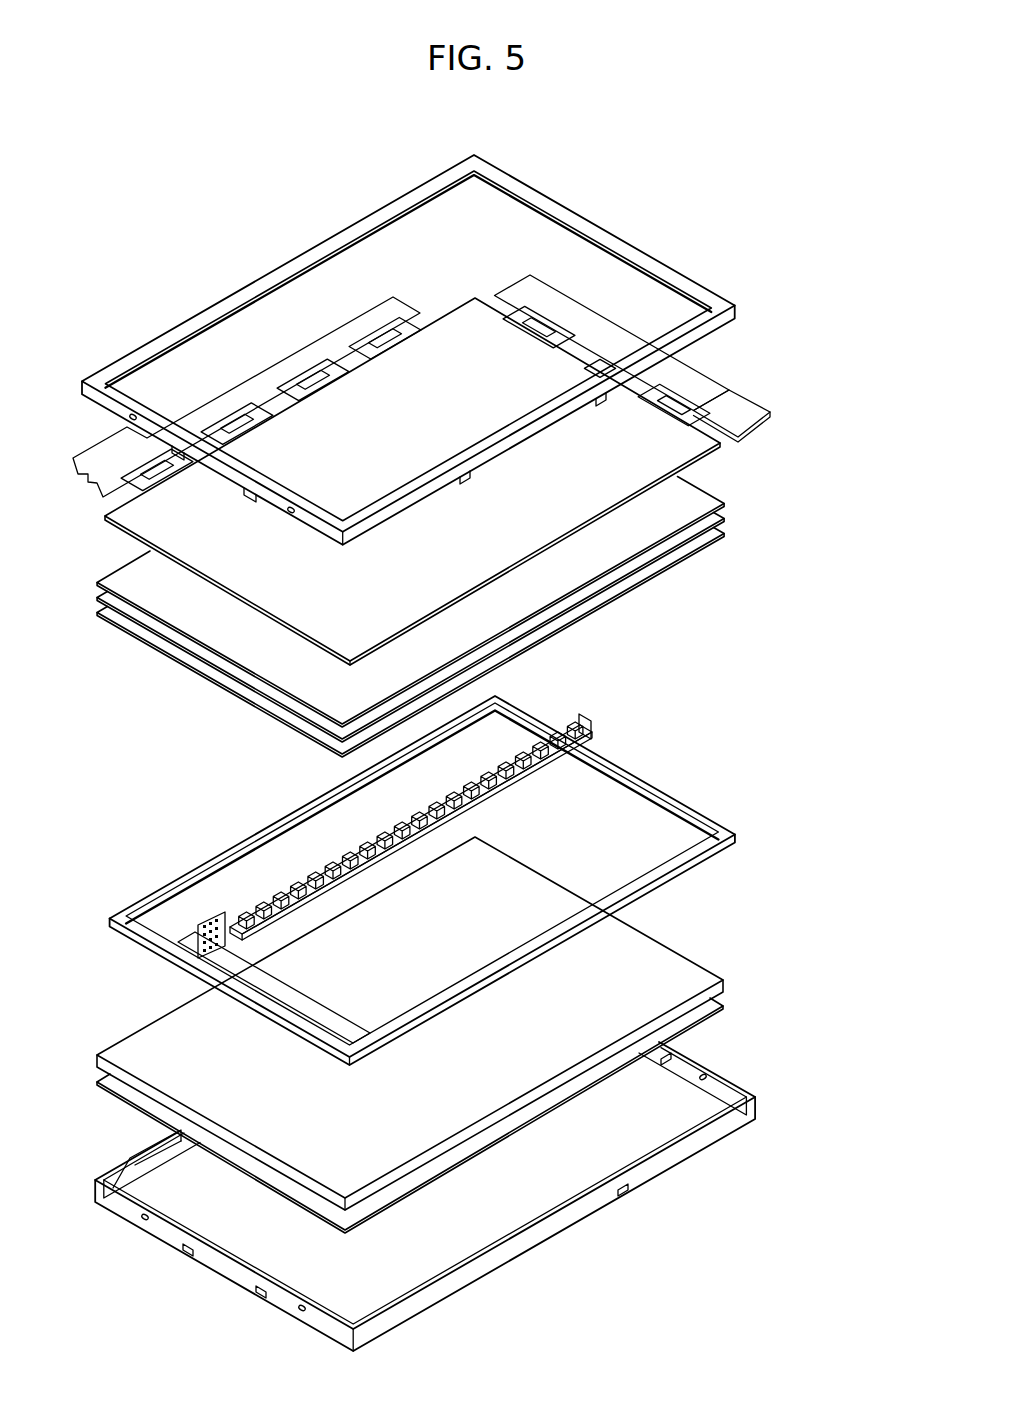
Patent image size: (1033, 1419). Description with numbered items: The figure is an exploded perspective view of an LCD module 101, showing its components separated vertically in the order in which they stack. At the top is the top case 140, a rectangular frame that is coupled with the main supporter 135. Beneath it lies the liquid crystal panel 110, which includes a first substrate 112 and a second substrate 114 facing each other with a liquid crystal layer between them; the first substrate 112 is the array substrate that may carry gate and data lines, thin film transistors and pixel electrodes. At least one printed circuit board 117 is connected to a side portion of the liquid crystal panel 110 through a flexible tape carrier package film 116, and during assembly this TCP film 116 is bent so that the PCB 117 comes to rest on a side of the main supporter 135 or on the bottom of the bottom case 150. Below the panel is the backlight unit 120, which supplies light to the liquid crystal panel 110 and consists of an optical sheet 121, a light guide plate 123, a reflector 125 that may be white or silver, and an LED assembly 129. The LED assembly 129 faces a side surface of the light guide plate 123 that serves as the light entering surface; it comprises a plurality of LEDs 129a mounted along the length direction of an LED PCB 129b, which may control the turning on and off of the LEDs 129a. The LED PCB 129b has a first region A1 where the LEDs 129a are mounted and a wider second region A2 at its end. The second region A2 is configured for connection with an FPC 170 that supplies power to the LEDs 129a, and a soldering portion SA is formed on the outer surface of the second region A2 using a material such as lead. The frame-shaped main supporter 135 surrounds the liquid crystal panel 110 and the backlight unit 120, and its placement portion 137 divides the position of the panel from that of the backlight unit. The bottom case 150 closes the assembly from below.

The LCD module 101 is at (718, 150).
The top case 140 is at (722, 298).
The liquid crystal panel 110 is at (836, 368).
The first substrate 112 is at (745, 423).
The second substrate 114 is at (683, 450).
The tape carrier package film 116 is at (515, 322).
The printed circuit board 117 is at (352, 328).
The backlight unit 120 is at (815, 1019).
The optical sheet 121 is at (731, 498).
The light guide plate 123 is at (829, 972).
The reflector 125 is at (725, 1007).
The LED assembly 129 is at (837, 713).
The LEDs 129a is at (563, 751).
The LED PCB 129b is at (578, 714).
The main supporter 135 is at (687, 807).
The placement portion 137 is at (470, 725).
The bottom case 150 is at (577, 1217).
The FPC 170 is at (300, 1000).
The first region A1 is at (326, 852).
The second region A2 is at (208, 903).
The soldering portion SA is at (193, 940).